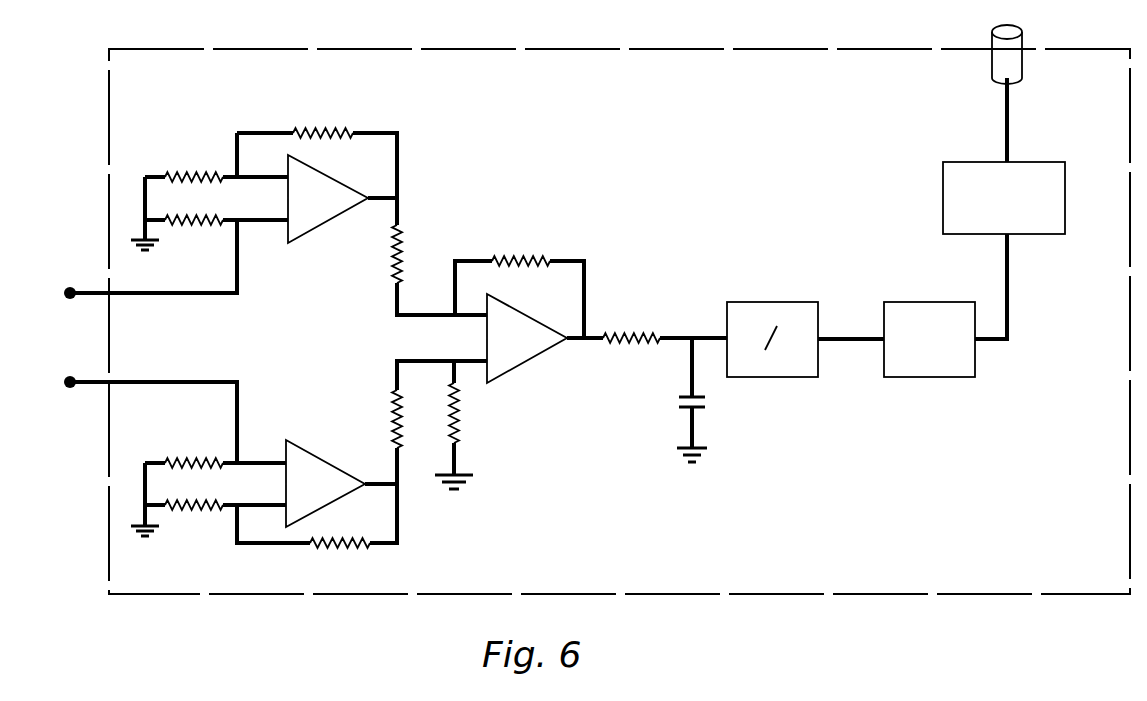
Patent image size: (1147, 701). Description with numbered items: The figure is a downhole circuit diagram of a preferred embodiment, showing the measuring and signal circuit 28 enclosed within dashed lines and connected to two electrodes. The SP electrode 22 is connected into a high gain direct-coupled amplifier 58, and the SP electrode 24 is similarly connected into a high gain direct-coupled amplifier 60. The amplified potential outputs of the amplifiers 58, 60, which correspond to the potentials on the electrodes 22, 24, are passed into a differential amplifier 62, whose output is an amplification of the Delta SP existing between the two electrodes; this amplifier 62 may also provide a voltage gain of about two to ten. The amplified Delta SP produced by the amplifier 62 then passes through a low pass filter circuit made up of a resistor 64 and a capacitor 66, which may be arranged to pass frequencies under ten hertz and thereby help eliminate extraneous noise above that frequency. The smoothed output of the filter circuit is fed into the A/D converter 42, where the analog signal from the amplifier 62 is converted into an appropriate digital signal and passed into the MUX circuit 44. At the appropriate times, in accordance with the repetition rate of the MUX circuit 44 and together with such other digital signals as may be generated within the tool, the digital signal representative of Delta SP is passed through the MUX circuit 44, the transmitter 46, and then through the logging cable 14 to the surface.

The logging cable 14 is at (1023, 64).
The SP electrode 22 is at (67, 286).
The SP electrode 24 is at (67, 374).
The measuring and signal circuit 28 is at (643, 127).
The A/D converter 42 is at (770, 302).
The MUX circuit 44 is at (923, 302).
The transmitter 46 is at (943, 185).
The high gain direct-coupled amplifier 58 is at (335, 173).
The high gain direct-coupled amplifier 60 is at (323, 457).
The differential amplifier 62 is at (532, 361).
The resistor 64 is at (632, 333).
The capacitor 66 is at (707, 398).